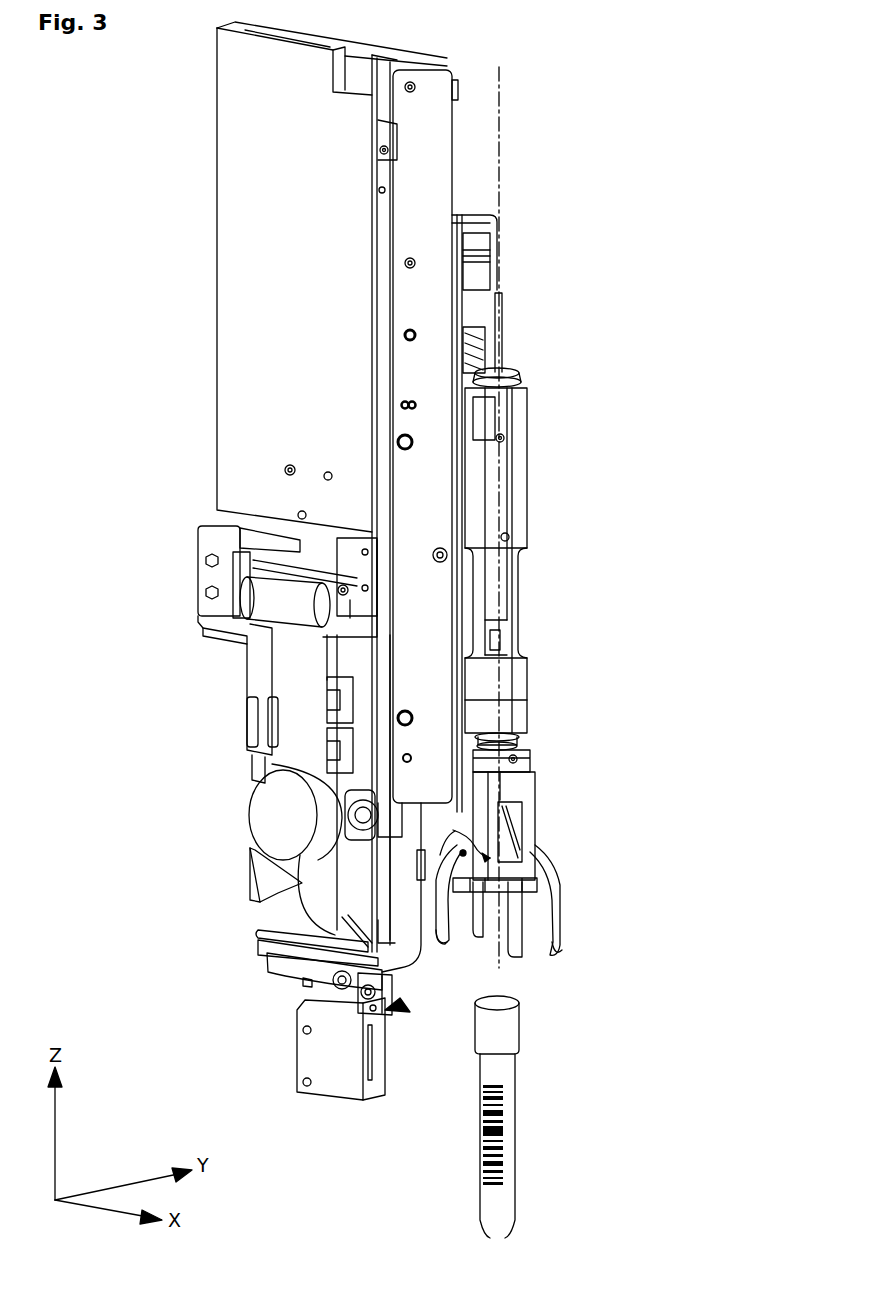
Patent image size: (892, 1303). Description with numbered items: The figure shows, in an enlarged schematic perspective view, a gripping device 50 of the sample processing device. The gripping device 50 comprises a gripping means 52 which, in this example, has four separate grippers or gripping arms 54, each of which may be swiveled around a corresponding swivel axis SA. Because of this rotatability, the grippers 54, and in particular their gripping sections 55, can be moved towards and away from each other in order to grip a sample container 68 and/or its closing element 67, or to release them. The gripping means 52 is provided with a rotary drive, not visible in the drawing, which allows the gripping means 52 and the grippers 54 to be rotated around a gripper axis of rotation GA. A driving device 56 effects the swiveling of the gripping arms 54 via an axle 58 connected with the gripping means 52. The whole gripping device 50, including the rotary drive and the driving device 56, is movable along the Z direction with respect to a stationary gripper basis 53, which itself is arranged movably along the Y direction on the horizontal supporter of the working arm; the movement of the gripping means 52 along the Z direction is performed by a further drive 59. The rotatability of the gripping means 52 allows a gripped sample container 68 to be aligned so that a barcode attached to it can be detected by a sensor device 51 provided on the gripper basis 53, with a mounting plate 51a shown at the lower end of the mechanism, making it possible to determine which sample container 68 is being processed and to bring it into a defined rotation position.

The gripping device 50 is at (626, 282).
The sensor device 51 is at (333, 1060).
The mounting plate 51a is at (300, 1010).
The gripping means 52 is at (568, 856).
The gripper basis 53 is at (256, 339).
The gripping arms 54 is at (557, 902).
The gripping sections 55 is at (552, 948).
The driving device 56 is at (508, 370).
The axle 58 is at (497, 592).
The further drive 59 is at (282, 600).
The closing element 67 is at (510, 1034).
The sample container 68 is at (515, 1140).
The gripper axis of rotation GA is at (535, 985).
The swivel axis SA is at (436, 887).